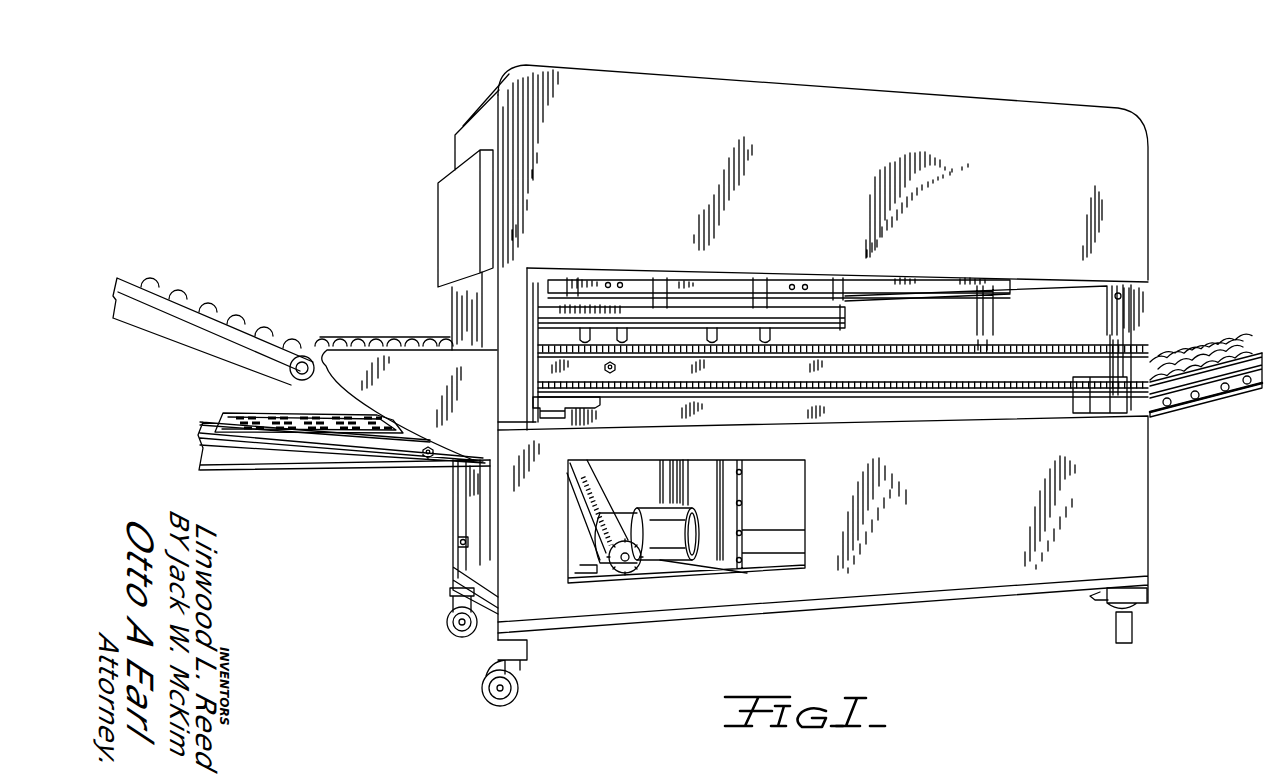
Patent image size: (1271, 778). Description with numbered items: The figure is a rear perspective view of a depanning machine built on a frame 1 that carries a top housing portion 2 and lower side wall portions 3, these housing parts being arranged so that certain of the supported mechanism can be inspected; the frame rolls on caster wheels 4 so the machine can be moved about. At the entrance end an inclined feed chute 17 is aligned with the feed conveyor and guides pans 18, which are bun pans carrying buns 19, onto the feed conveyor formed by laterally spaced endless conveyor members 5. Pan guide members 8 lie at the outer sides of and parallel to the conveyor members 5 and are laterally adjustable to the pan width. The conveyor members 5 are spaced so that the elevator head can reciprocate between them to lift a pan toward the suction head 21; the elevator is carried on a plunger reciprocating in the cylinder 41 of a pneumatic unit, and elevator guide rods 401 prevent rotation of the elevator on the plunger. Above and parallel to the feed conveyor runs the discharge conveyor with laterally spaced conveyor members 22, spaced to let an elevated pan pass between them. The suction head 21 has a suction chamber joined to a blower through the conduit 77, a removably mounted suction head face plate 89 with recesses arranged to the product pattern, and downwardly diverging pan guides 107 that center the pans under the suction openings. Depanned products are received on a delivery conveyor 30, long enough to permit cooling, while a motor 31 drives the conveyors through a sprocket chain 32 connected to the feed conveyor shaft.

The frame 1 is at (453, 507).
The top housing portion 2 is at (517, 138).
The lower side wall portions 3 is at (512, 547).
The caster wheels 4 is at (1165, 335).
The endless conveyor members 5 is at (550, 420).
The pan guide members 8 is at (1092, 403).
The feed chute 17 is at (1237, 385).
The pans 18 is at (263, 412).
The buns 19 is at (1177, 360).
The suction head 21 is at (842, 317).
The conveyor members 22 is at (900, 347).
The delivery conveyor 30 is at (222, 340).
The motor 31 is at (667, 550).
The sprocket chain 32 is at (597, 470).
The cylinder 41 is at (675, 494).
The conduit 77 is at (697, 276).
The suction head face plate 89 is at (541, 316).
The pan guides 107 is at (624, 322).
The elevator guide rods 401 is at (657, 462).